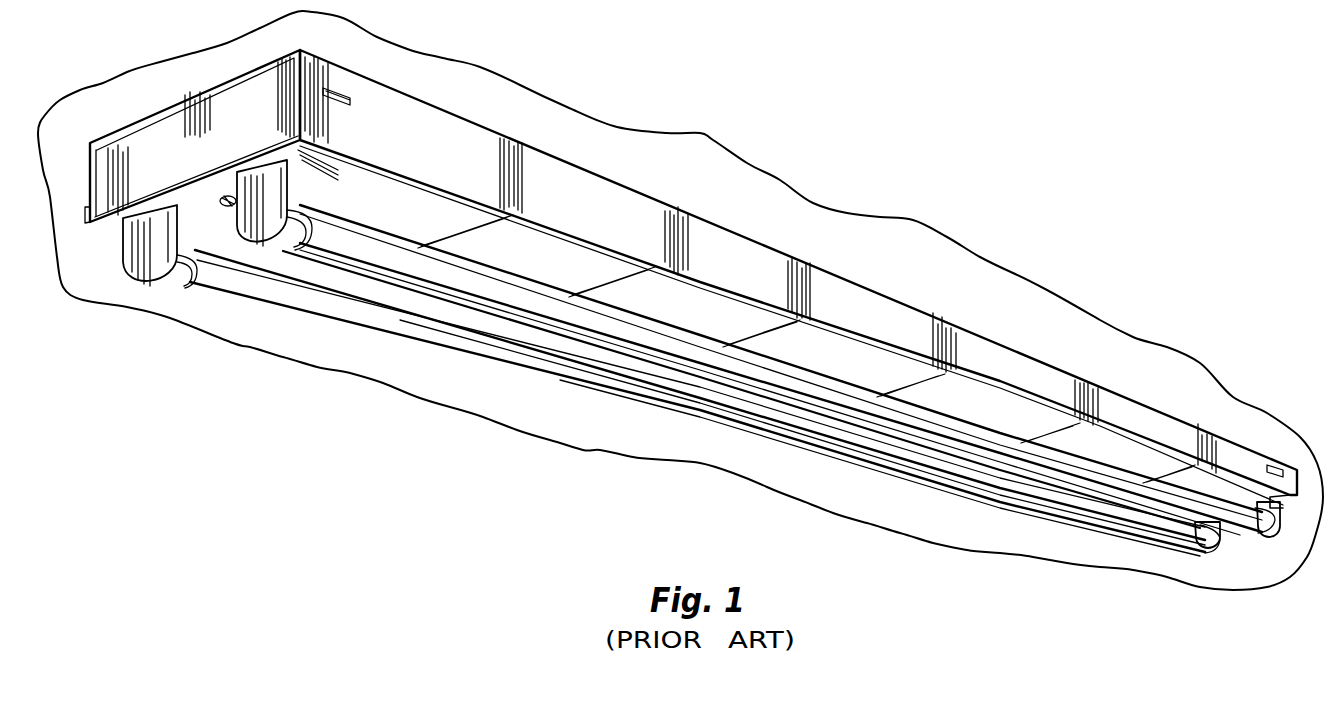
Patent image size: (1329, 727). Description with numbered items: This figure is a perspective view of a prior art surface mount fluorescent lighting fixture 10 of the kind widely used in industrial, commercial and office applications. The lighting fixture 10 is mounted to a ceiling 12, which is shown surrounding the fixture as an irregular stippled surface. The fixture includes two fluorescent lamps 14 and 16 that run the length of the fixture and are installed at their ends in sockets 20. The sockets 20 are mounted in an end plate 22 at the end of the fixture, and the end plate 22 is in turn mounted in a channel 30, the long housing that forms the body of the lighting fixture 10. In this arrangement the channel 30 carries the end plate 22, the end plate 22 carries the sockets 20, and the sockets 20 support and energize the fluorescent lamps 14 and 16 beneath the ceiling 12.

The surface mount fluorescent lighting fixture 10 is at (691, 325).
The ceiling 12 is at (663, 143).
The fluorescent lamp 14 is at (440, 292).
The fluorescent lamp 16 is at (333, 322).
The socket 20 is at (250, 227).
The end plate 22 is at (163, 128).
The channel 30 is at (427, 120).